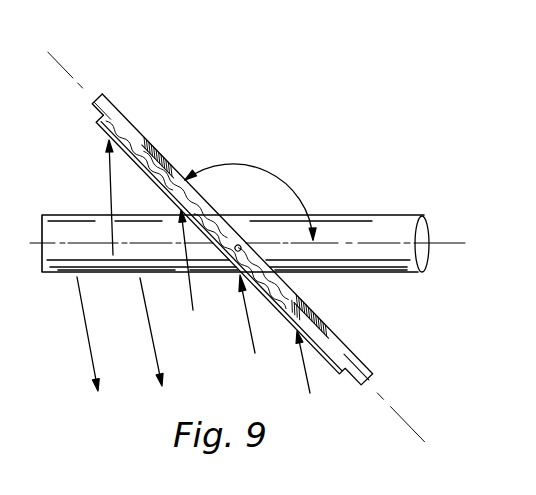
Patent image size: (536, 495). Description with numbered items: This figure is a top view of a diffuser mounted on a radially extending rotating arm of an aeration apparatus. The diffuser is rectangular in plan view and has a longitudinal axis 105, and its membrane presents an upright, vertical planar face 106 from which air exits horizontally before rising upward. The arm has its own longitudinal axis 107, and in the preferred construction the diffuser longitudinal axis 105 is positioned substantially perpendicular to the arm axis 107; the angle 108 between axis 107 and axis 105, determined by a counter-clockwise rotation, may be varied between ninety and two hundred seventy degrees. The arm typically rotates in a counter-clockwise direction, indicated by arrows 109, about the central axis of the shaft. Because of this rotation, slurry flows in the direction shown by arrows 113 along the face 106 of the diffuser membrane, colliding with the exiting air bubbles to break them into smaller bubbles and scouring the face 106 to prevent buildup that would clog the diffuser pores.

The diffuser longitudinal axis 105 is at (80, 88).
The planar face 106 is at (137, 129).
The longitudinal axis of the arm 107 is at (431, 245).
The angle 108 is at (256, 165).
The arrows 109 is at (95, 363).
The arrows 113 is at (307, 381).